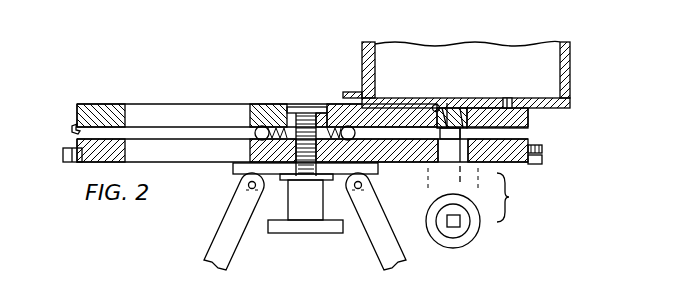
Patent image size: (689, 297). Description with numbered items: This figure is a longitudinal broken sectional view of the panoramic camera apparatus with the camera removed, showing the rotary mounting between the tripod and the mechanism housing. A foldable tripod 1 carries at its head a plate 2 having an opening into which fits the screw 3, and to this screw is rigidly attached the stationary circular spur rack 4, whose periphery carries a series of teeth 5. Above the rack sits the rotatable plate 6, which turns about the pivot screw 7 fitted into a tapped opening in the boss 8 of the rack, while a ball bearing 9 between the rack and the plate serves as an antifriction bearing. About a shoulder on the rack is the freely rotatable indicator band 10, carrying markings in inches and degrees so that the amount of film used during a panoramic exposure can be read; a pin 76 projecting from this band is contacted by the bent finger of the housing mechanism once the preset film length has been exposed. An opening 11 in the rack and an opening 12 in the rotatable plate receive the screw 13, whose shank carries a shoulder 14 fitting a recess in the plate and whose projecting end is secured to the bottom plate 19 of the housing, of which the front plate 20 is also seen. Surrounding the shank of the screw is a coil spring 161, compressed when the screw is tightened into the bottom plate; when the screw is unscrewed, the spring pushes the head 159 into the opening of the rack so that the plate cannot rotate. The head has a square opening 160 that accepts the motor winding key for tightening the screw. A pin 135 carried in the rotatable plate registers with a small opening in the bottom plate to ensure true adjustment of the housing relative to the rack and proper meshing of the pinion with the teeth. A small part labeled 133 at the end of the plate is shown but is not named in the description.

The foldable tripod 1 is at (223, 238).
The plate 2 is at (257, 167).
The screw 3 is at (300, 164).
The stationary circular spur rack 4 is at (517, 166).
The teeth 5 is at (542, 158).
The rotatable plate 6 is at (135, 117).
The pivot screw 7 is at (298, 107).
The boss 8 is at (285, 125).
The ball bearing 9 is at (343, 127).
The rotatable indicator band 10 is at (78, 147).
The opening 11 is at (437, 160).
The opening 12 is at (465, 103).
The screw 13 is at (528, 124).
The shoulder 14 is at (437, 103).
The bottom plate 19 is at (520, 100).
The front plate 20 is at (362, 58).
The pin 76 is at (542, 148).
The hook 133 is at (72, 128).
The pin 135 is at (507, 107).
The head 159 is at (455, 213).
The square opening 160 is at (440, 139).
The coil spring 161 is at (447, 101).